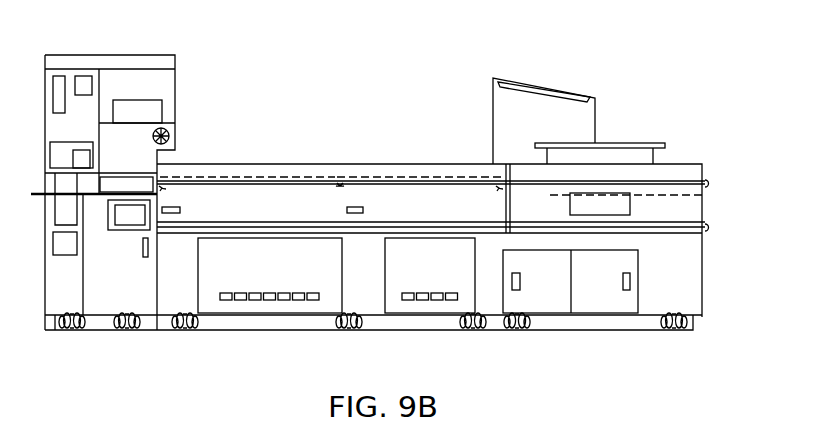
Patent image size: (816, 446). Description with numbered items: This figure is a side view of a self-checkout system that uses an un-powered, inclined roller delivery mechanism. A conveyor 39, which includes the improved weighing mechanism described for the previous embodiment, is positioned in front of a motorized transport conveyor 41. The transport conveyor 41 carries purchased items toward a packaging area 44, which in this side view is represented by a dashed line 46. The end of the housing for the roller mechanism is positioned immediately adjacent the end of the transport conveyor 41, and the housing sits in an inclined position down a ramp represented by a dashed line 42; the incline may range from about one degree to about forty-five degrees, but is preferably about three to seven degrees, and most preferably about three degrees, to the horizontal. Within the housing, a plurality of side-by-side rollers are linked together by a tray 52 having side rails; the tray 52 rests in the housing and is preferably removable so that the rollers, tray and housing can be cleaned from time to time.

The conveyor 39 is at (257, 177).
The motorized transport conveyor 41 is at (423, 177).
The dashed line representing the ramp 42 is at (555, 190).
The packaging area 44 is at (623, 168).
The dashed line representing the packaging area 46 is at (693, 167).
The tray 52 is at (547, 83).